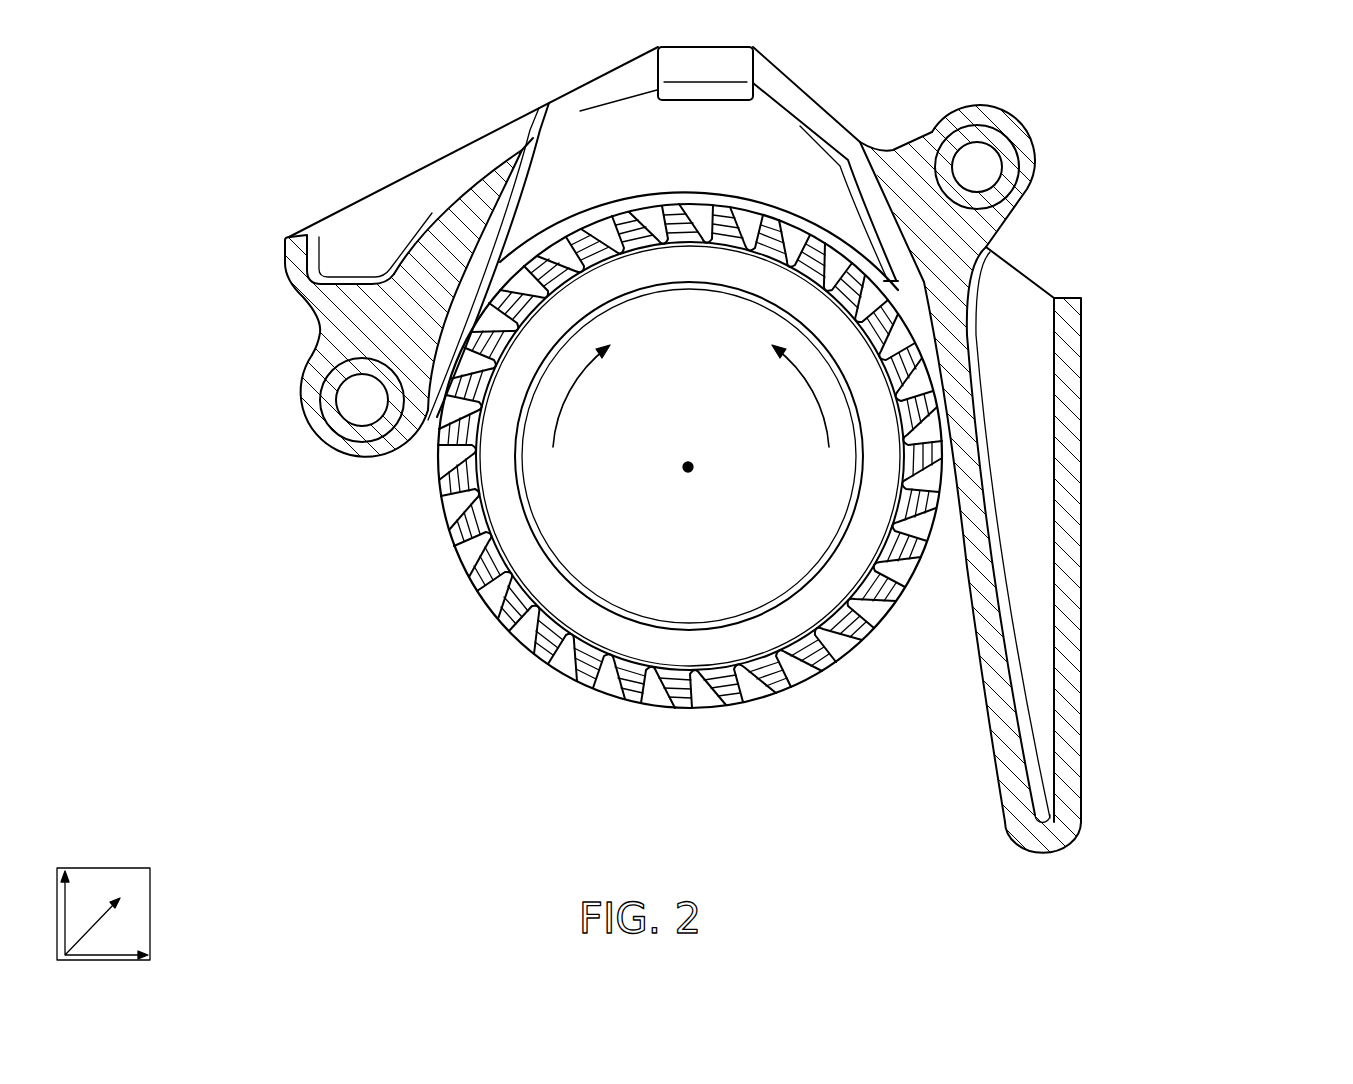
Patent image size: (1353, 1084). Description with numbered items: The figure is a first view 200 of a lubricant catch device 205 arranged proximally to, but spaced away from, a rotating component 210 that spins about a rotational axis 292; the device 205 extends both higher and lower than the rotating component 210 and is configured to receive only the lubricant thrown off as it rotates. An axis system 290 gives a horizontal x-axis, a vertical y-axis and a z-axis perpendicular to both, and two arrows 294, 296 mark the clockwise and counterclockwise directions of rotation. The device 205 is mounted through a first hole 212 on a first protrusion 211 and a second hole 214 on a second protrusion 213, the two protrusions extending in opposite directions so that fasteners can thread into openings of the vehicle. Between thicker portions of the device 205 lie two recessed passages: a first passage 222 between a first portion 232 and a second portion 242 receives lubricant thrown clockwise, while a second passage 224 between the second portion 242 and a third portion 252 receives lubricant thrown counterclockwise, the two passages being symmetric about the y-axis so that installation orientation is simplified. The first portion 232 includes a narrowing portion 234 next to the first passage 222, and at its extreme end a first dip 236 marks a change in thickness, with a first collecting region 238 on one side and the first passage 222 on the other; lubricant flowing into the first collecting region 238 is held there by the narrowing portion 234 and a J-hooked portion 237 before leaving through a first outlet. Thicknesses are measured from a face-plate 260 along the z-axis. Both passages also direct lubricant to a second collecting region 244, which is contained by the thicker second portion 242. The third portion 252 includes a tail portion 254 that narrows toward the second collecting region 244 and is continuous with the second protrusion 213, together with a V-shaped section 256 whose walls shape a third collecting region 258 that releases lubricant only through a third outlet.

The first view 200 is at (1276, 71).
The device 205 is at (190, 254).
The rotating component 210 is at (498, 618).
The first protrusion 211 is at (300, 413).
The first hole 212 is at (348, 432).
The second protrusion 213 is at (1019, 200).
The second hole 214 is at (1009, 158).
The first passage 222 is at (518, 195).
The second passage 224 is at (880, 217).
The first portion 232 is at (368, 323).
The narrowing portion 234 is at (436, 233).
The first dip 236 is at (583, 86).
The J-hooked portion 237 is at (293, 248).
The first collecting region 238 is at (357, 232).
The second portion 242 is at (683, 166).
The second collecting region 244 is at (688, 77).
The third portion 252 is at (928, 276).
The tail portion 254 is at (862, 141).
The V-shaped section 256 is at (1040, 852).
The third collecting region 258 is at (1005, 466).
The face-plate 260 is at (803, 90).
The axis system 290 is at (152, 872).
The axis 292 is at (694, 469).
The arrow 294 is at (556, 440).
The arrow 296 is at (826, 443).